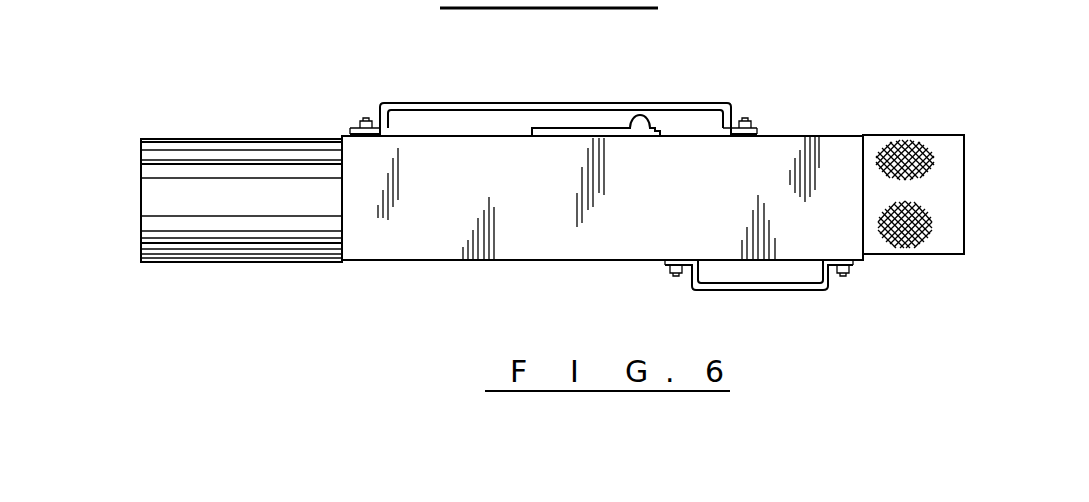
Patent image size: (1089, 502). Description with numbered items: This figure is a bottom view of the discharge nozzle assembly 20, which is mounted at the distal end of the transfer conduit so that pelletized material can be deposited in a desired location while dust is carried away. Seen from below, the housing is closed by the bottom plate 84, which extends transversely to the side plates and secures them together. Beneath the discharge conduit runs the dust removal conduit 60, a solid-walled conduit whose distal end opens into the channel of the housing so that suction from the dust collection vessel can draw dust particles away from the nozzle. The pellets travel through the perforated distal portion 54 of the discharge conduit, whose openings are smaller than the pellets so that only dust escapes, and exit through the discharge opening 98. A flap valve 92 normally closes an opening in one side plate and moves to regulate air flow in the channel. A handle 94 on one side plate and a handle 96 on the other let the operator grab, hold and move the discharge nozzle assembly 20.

The discharge nozzle assembly 20 is at (766, 41).
The dust removal conduit 60 is at (237, 160).
The bottom plate 84 is at (455, 240).
The handle 94 is at (513, 103).
The flap valve 92 is at (652, 122).
The handle 96 is at (800, 290).
The discharge opening 98 is at (964, 176).
The distal portion of discharge conduit 54 is at (920, 254).